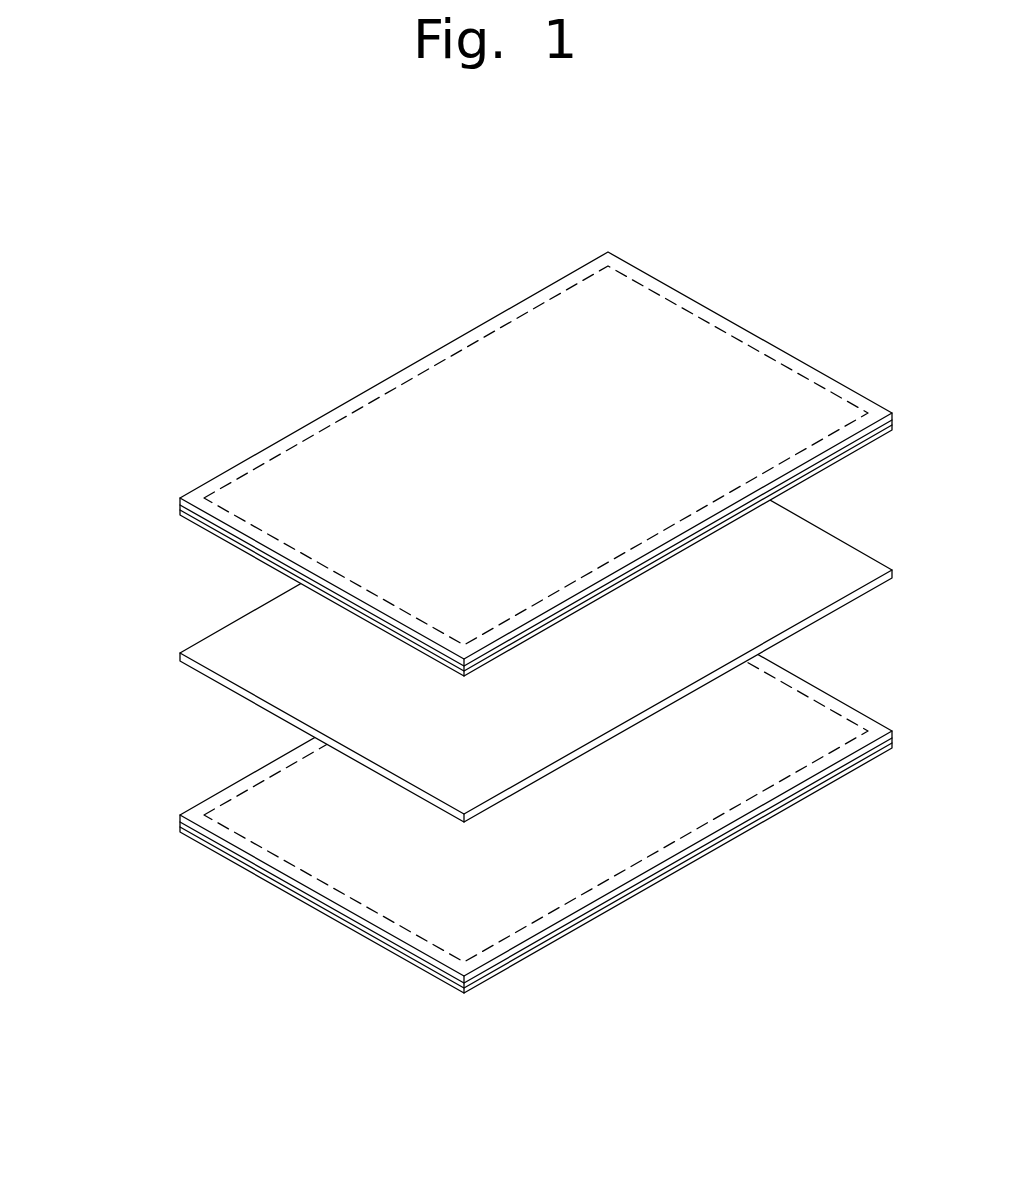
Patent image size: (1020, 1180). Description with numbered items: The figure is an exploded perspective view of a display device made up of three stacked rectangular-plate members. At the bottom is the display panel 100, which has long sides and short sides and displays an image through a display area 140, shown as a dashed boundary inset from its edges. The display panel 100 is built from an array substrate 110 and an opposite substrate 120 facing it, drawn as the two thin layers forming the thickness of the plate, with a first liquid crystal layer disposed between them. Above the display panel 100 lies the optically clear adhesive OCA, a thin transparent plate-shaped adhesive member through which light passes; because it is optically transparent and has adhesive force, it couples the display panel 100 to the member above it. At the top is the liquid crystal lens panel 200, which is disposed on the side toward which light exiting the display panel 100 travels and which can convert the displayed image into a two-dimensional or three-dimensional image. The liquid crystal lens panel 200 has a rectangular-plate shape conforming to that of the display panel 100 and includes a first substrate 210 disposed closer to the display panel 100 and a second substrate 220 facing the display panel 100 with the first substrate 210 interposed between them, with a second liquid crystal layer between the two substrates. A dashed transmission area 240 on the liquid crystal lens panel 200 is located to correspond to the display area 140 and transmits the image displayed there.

The display panel 100 is at (93, 790).
The array substrate 110 is at (180, 829).
The opposite substrate 120 is at (180, 818).
The display area 140 is at (247, 790).
The optically clear adhesive OCA is at (235, 646).
The liquid crystal lens panel 200 is at (93, 477).
The first substrate 210 is at (180, 511).
The second substrate 220 is at (180, 503).
The transmission area 240 is at (252, 472).